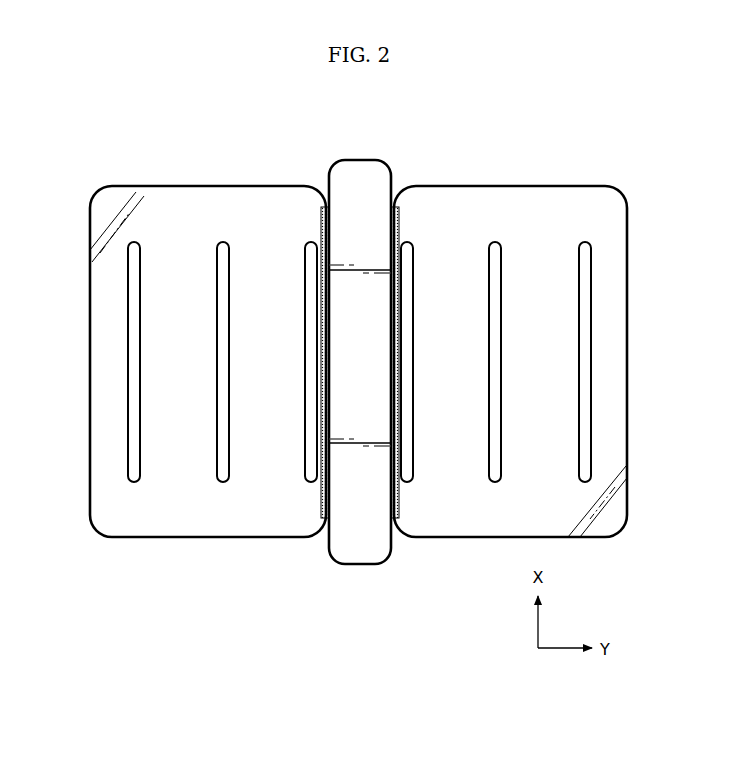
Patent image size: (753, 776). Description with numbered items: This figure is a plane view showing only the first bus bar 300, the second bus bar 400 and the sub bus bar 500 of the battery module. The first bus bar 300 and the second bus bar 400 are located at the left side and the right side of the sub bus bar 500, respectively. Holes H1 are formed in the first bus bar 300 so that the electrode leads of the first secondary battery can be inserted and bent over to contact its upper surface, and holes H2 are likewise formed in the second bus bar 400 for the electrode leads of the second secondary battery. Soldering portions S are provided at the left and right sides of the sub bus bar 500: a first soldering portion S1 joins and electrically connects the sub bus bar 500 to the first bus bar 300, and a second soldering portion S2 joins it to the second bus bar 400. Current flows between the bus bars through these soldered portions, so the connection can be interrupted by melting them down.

The first bus bar 300 is at (100, 307).
The second bus bar 400 is at (618, 308).
The sub bus bar 500 is at (358, 170).
The soldering portions S is at (330, 436).
The first soldering portion S1 is at (317, 401).
The second soldering portion S2 is at (389, 505).
The hole H1 is at (133, 263).
The hole H2 is at (584, 263).